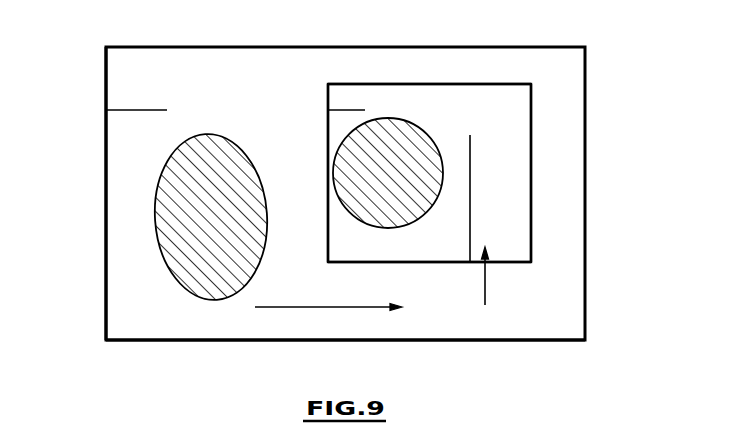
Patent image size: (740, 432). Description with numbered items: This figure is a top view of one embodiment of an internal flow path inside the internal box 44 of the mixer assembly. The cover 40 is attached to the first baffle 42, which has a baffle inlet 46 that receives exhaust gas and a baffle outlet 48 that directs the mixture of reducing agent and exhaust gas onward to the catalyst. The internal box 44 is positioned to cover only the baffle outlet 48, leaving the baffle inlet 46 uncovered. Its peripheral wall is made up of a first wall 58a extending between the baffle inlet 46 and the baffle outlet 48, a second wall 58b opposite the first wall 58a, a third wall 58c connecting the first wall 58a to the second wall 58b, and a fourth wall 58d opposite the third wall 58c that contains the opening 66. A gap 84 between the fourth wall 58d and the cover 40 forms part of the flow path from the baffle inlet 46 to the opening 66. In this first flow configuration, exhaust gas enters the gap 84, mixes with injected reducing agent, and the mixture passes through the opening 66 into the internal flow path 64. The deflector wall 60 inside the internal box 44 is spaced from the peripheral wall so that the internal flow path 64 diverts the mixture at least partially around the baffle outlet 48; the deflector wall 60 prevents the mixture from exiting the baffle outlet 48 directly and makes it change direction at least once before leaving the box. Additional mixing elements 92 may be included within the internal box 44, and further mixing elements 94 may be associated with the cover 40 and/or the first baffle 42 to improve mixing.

The cover 40 is at (594, 71).
The first baffle 42 is at (125, 166).
The internal box 44 is at (542, 133).
The baffle inlet 46 is at (163, 262).
The baffle outlet 48 is at (410, 122).
The first wall 58a is at (328, 137).
The second wall 58b is at (531, 192).
The third wall 58c is at (482, 84).
The fourth wall 58d is at (360, 262).
The deflector wall 60 is at (481, 221).
The internal flow path 64 is at (485, 290).
The opening 66 is at (502, 278).
The gap 84 is at (447, 323).
The mixing elements 92 is at (344, 97).
The additional mixing elements 94 is at (131, 97).